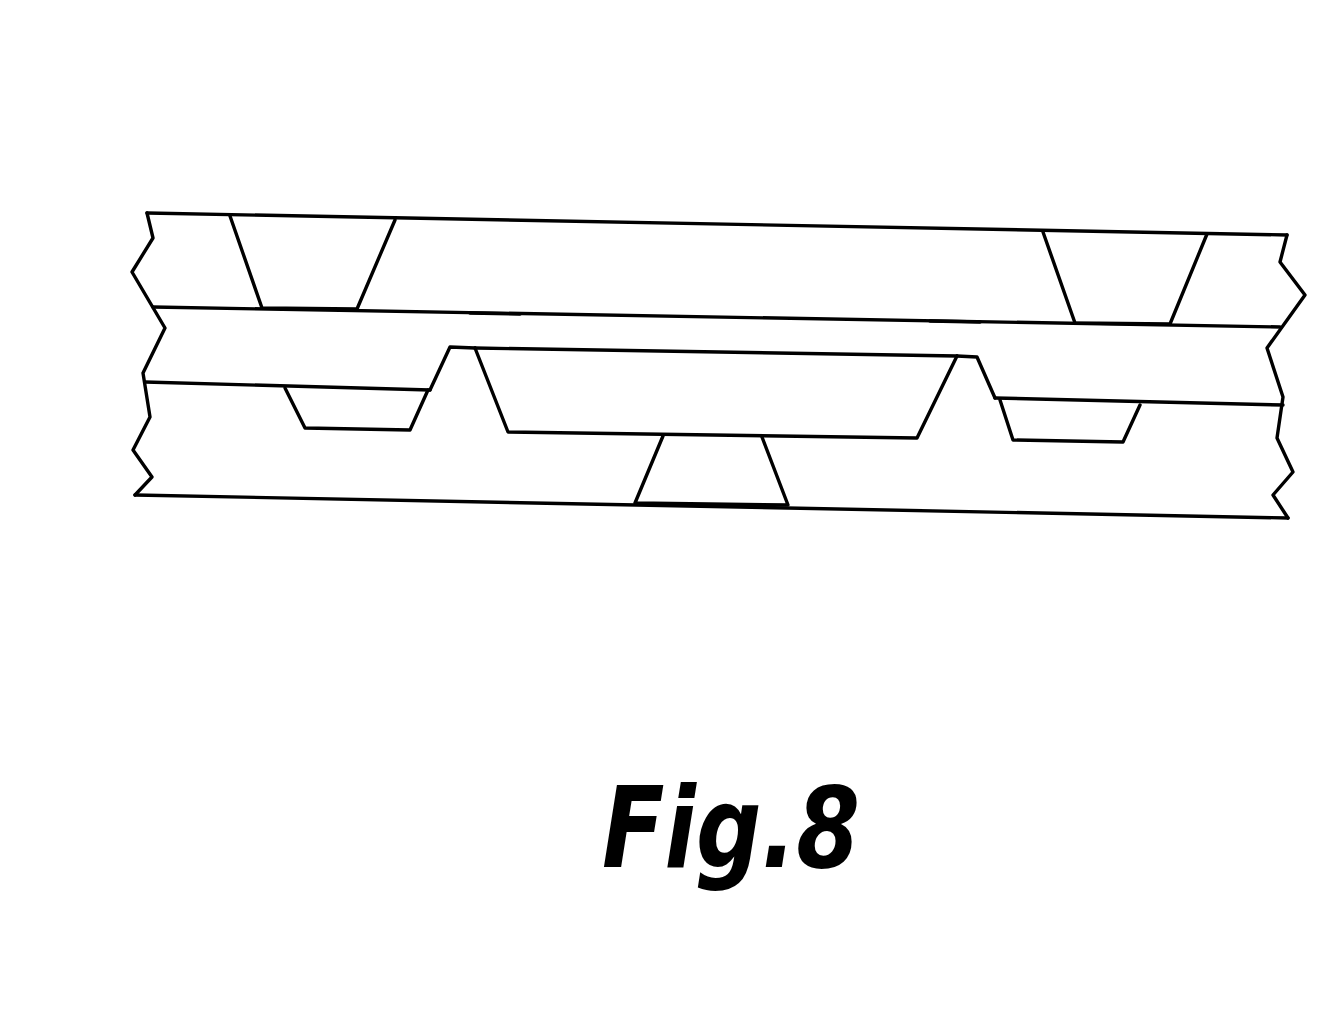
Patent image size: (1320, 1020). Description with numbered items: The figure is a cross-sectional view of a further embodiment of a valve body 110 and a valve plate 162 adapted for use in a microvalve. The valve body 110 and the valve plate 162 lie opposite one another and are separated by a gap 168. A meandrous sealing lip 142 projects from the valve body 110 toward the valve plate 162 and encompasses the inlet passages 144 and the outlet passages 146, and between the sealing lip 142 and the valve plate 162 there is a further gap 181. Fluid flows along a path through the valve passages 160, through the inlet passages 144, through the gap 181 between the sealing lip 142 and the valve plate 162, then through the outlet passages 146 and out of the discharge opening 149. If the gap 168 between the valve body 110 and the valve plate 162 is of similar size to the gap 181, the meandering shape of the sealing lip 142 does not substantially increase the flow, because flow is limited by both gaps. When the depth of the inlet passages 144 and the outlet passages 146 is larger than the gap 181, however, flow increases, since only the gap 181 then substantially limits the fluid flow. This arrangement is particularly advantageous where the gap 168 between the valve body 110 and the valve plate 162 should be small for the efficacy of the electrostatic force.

The valve body 110 is at (280, 463).
The meandrous sealing lip 142 is at (463, 347).
The inlet passages 144 is at (365, 408).
The outlet passages 146 is at (573, 400).
The discharge opening 149 is at (713, 473).
The valve passages 160 is at (310, 238).
The valve plate 162 is at (717, 248).
The gap 168 is at (220, 347).
The gap 181 is at (493, 325).